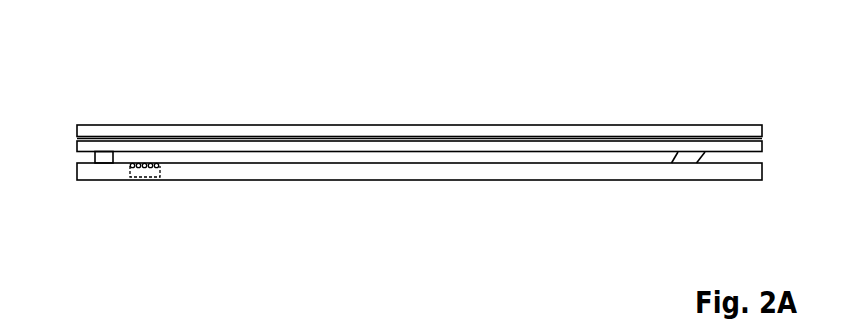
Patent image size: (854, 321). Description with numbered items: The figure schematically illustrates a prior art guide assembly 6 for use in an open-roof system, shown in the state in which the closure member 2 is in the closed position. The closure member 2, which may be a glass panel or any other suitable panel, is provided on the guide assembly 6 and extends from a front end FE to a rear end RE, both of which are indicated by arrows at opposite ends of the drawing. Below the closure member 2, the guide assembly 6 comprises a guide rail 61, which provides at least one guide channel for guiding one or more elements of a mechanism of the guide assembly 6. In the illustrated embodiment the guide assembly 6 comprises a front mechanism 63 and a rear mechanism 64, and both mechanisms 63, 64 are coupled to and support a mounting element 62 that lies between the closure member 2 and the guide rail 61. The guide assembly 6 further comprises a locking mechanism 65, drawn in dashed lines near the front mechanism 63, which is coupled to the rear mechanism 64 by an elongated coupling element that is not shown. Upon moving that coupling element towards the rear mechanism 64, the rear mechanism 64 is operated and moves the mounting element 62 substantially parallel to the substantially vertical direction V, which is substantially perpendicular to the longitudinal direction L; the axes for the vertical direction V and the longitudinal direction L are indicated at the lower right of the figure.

The closure member 2 is at (140, 128).
The guide assembly 6 is at (58, 147).
The guide rail 61 is at (272, 170).
The mounting element 62 is at (168, 147).
The front mechanism 63 is at (104, 158).
The rear mechanism 64 is at (685, 153).
The locking mechanism 65 is at (150, 172).
The front end FE is at (100, 86).
The rear end RE is at (733, 108).
The vertical direction V is at (802, 168).
The longitudinal direction L is at (733, 232).